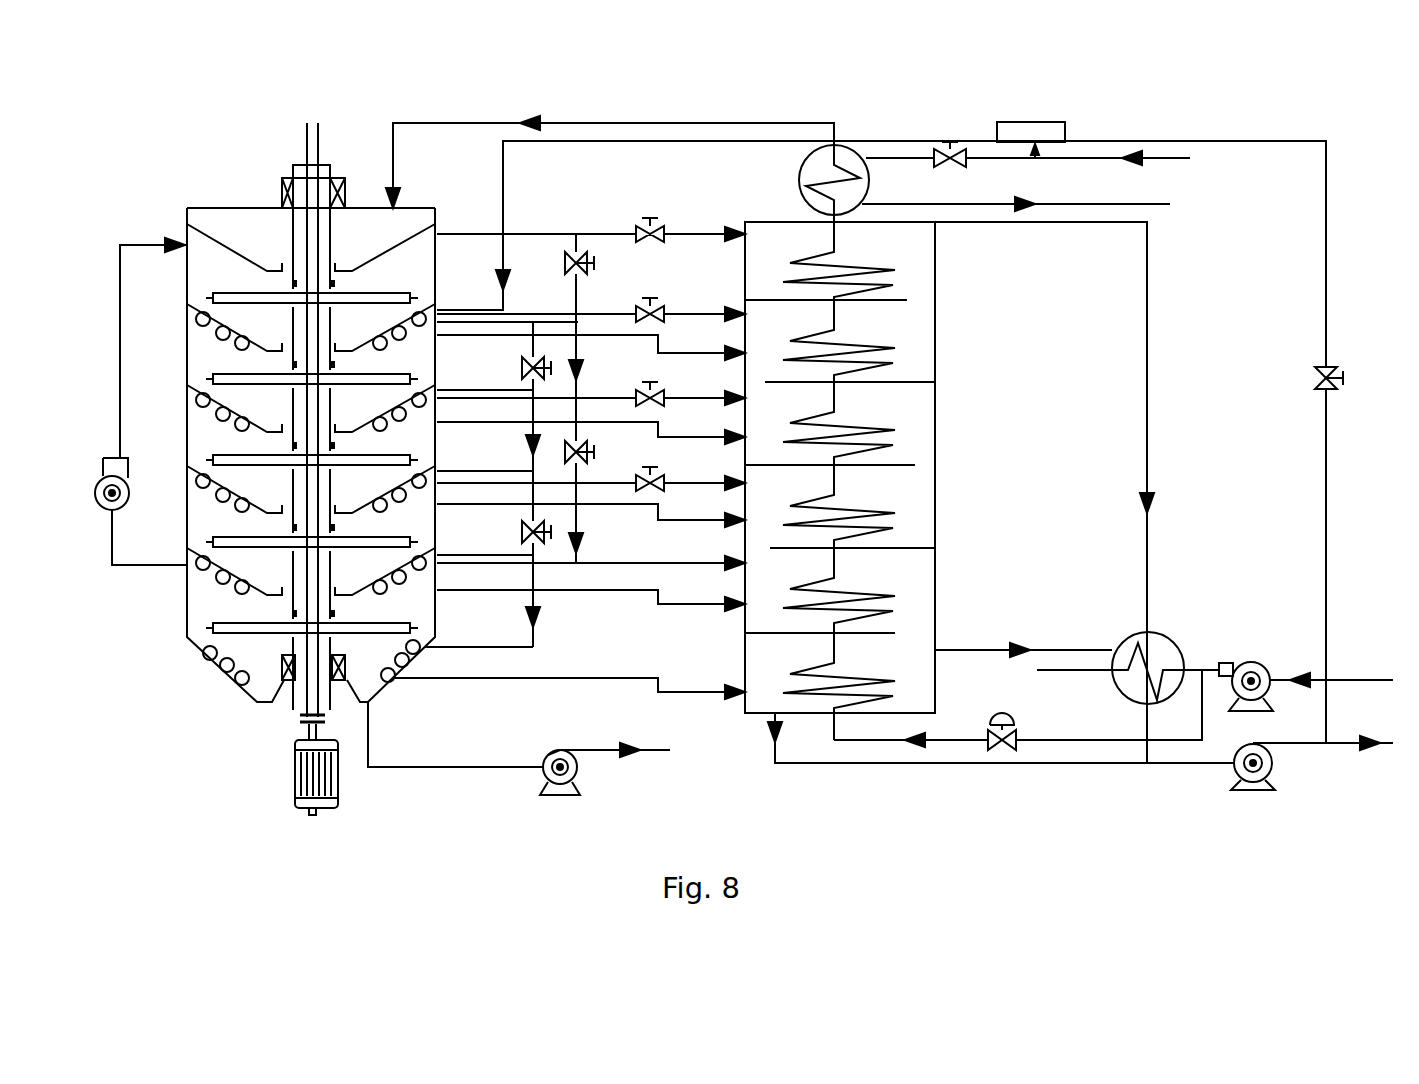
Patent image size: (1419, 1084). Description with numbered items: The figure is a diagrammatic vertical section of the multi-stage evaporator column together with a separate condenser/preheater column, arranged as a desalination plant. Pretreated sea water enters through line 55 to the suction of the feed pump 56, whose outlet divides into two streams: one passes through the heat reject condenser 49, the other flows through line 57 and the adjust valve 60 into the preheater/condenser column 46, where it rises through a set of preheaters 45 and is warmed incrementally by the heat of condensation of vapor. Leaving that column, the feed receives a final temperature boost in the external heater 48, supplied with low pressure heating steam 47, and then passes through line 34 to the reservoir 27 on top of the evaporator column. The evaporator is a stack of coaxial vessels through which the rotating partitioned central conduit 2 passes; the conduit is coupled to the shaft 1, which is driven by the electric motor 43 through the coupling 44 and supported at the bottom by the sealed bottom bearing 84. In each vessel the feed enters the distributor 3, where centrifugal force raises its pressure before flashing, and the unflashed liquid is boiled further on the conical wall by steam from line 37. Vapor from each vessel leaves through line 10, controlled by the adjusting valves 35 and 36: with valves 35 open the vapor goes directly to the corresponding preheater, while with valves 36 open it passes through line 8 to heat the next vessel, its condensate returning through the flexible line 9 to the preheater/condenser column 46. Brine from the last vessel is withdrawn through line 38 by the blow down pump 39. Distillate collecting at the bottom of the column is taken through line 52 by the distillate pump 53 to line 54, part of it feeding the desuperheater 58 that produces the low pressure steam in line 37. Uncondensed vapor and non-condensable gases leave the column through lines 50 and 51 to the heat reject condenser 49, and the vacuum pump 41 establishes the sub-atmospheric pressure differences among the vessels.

The shaft 1 is at (324, 230).
The rotating partitioned central conduit 2 is at (290, 254).
The distributor 3 is at (355, 285).
The line 8 is at (497, 388).
The flexible line 9 is at (665, 349).
The line 10 is at (589, 222).
The reservoir 27 is at (250, 206).
The line 34 is at (422, 120).
The adjusting valve 35 is at (654, 219).
The adjusting valve 36 is at (560, 272).
The line 37 is at (511, 200).
The line 38 is at (435, 761).
The blow down pump 39 is at (541, 754).
The vacuum pump 41 is at (104, 518).
The electric motor 43 is at (292, 805).
The coupling 44 is at (293, 729).
The preheater 45 is at (798, 252).
The preheater/condenser column 46 is at (940, 464).
The low pressure heating steam 47 is at (1098, 160).
The external heater 48 is at (795, 193).
The heat reject condenser 49 is at (1192, 617).
The line 50 is at (1045, 645).
The line 51 is at (1140, 377).
The line 52 is at (770, 775).
The distillate pump 53 is at (1270, 796).
The line 54 is at (1384, 751).
The line 55 is at (1385, 676).
The feed pump 56 is at (1237, 665).
The line 57 is at (1110, 742).
The desuperheater 58 is at (1053, 119).
The adjust valve 60 is at (984, 724).
The bottom bearing 84 is at (357, 675).